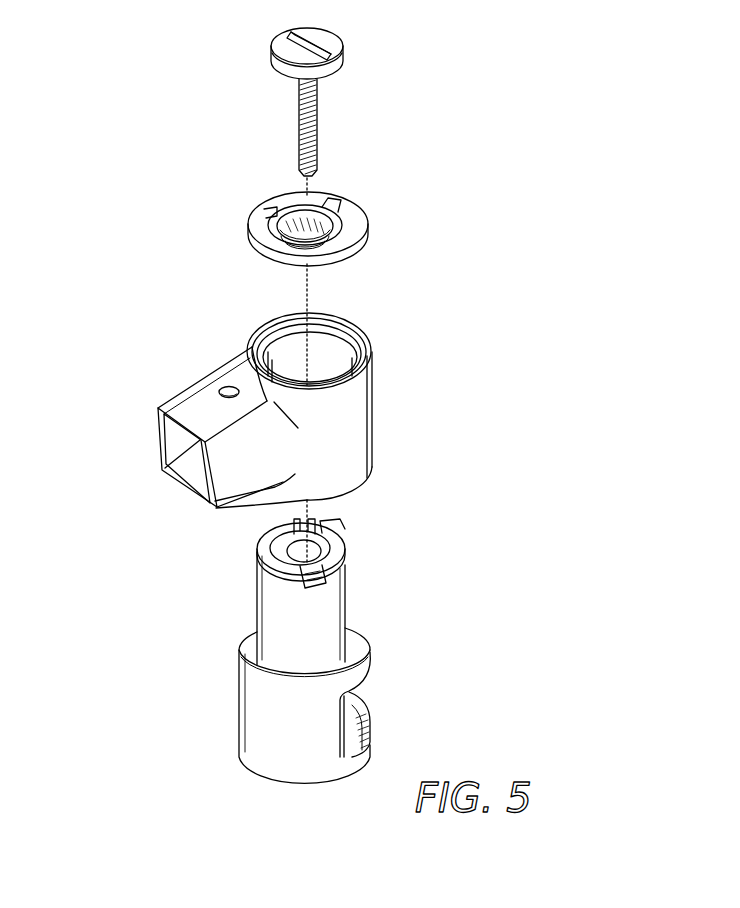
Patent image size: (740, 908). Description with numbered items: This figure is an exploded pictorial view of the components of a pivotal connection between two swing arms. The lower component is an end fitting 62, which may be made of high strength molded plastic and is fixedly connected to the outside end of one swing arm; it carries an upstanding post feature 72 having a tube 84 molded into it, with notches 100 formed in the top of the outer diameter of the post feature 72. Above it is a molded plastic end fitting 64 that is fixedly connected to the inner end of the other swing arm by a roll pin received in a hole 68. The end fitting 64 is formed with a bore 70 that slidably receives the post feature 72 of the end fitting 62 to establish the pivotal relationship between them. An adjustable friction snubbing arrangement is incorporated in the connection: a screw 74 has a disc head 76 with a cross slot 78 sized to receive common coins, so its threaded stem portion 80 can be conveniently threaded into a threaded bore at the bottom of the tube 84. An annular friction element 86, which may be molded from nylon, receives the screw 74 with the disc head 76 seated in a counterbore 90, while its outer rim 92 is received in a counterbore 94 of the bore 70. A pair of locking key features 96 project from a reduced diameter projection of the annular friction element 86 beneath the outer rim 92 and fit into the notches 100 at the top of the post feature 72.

The end fitting 62 is at (241, 710).
The end fitting 64 is at (283, 385).
The hole 68 is at (222, 389).
The bore 70 is at (284, 353).
The post feature 72 is at (265, 610).
The screw 74 is at (315, 98).
The disc head 76 is at (339, 62).
The cross slot 78 is at (328, 56).
The threaded stem portion 80 is at (319, 127).
The tube 84 is at (287, 558).
The annular friction element 86 is at (309, 231).
The counterbore 90 is at (338, 200).
The outer rim 92 is at (248, 214).
The counterbore 94 is at (338, 326).
The locking key features 96 is at (313, 266).
The notches 100 is at (297, 524).